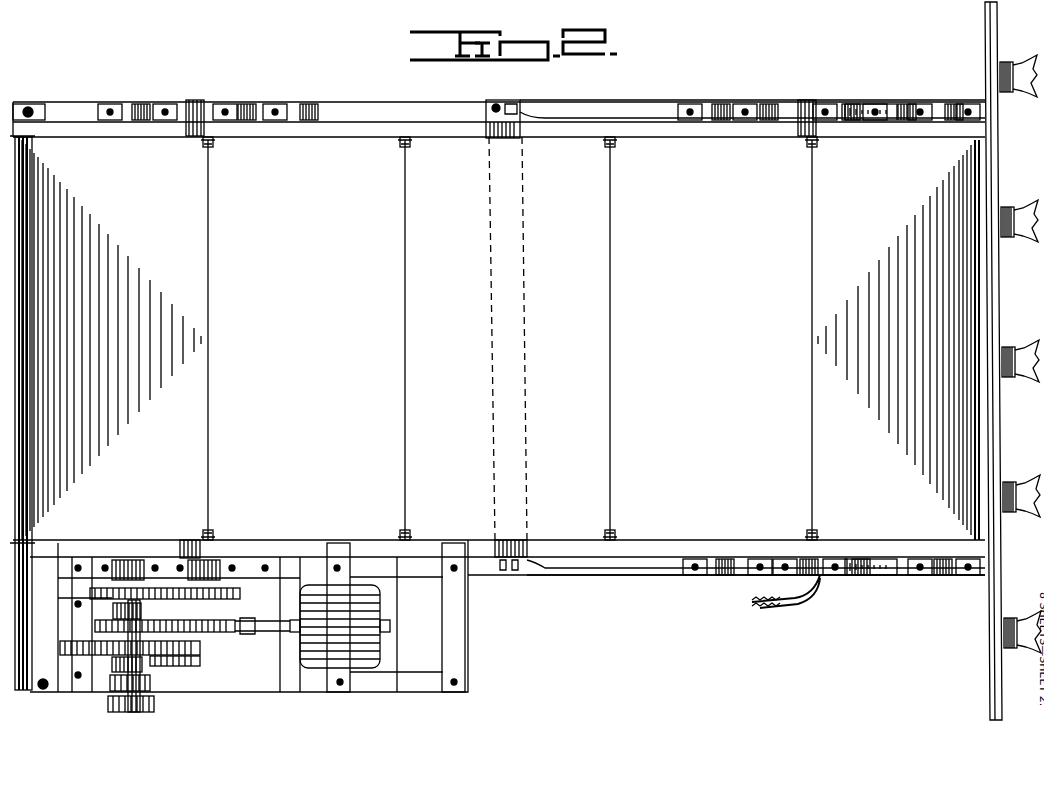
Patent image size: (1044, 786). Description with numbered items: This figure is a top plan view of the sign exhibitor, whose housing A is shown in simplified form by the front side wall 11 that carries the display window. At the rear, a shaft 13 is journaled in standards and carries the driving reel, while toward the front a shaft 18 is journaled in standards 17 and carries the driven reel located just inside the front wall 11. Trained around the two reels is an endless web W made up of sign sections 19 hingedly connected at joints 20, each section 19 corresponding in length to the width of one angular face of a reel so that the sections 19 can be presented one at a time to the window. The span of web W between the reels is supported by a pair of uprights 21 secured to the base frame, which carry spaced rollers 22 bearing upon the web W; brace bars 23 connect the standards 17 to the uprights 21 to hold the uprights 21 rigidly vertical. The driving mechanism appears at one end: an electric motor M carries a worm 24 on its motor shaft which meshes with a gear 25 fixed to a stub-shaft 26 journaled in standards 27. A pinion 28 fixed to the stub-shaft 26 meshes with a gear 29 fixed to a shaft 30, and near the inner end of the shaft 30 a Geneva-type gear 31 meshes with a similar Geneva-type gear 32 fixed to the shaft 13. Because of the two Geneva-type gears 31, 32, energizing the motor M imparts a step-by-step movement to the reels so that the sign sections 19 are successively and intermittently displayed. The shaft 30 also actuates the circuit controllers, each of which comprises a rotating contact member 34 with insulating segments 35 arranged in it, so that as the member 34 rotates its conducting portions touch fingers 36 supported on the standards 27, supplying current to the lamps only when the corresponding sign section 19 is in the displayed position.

The housing A is at (372, 106).
The endless web W is at (287, 143).
The electric motor M is at (355, 585).
The front side wall 11 is at (483, 132).
The shaft 13 is at (190, 555).
The standards 17 is at (874, 99).
The shaft 18 is at (822, 558).
The sections 19 is at (555, 340).
The hinge connections 20 is at (413, 142).
The uprights 21 is at (530, 542).
The rollers 22 is at (524, 160).
The brace bars 23 is at (600, 112).
The worm 24 is at (200, 640).
The gear 25 is at (236, 636).
The stub-shaft 26 is at (195, 656).
The standards 27 is at (182, 680).
The pinion 28 is at (222, 660).
The gear 29 is at (76, 680).
The shaft 30 is at (125, 702).
The Geneva-type gear 31 is at (150, 565).
The Geneva-type gear 32 is at (238, 562).
The rotating contact member 34 is at (112, 692).
The segments 35 is at (120, 700).
The fingers 36 is at (160, 690).